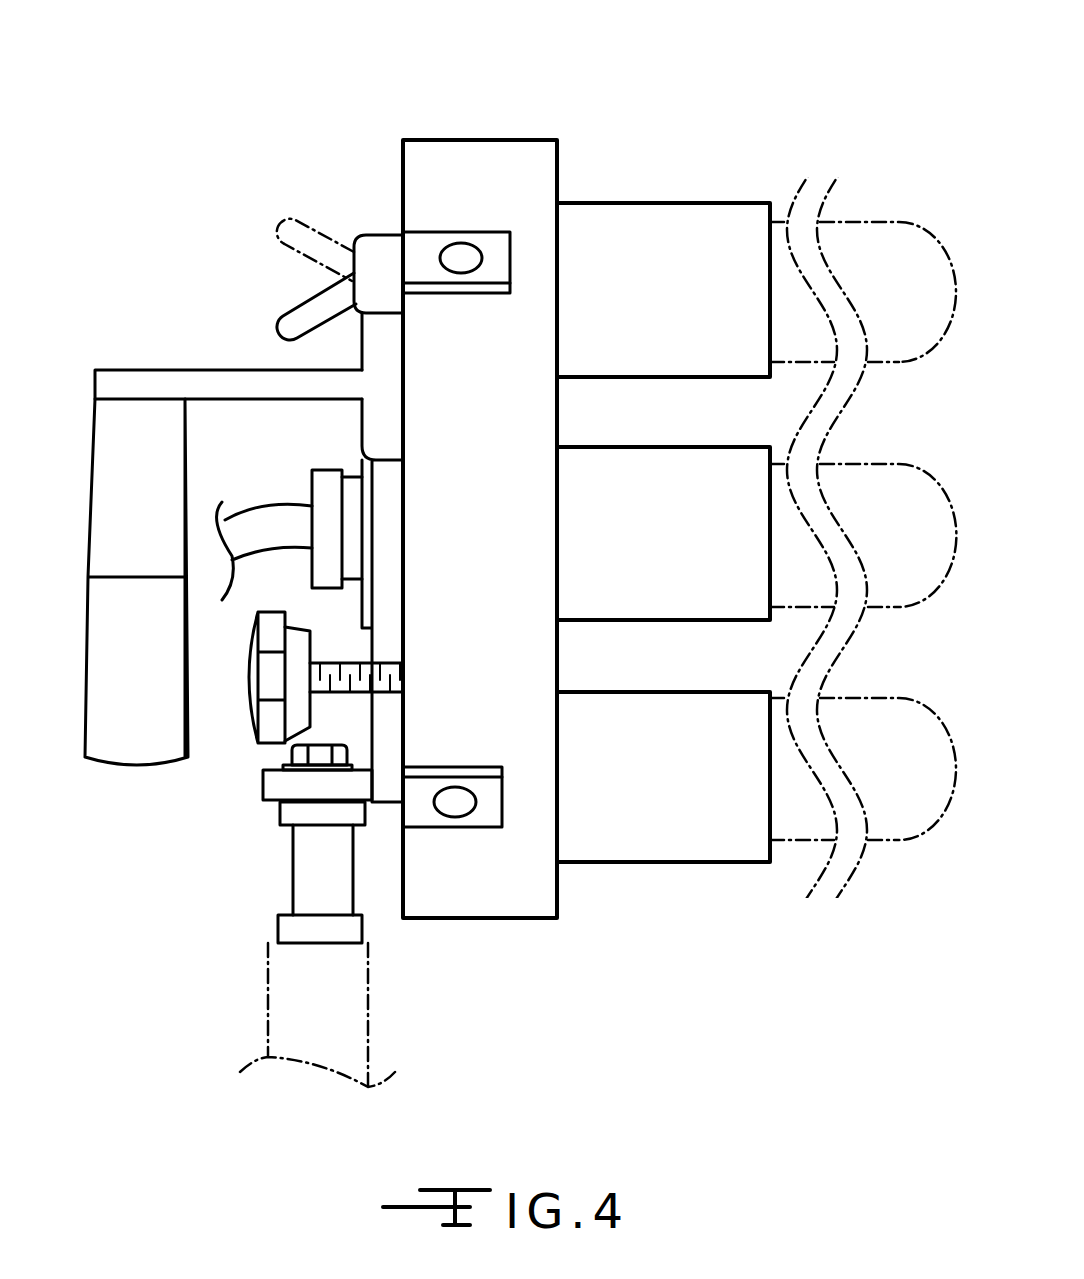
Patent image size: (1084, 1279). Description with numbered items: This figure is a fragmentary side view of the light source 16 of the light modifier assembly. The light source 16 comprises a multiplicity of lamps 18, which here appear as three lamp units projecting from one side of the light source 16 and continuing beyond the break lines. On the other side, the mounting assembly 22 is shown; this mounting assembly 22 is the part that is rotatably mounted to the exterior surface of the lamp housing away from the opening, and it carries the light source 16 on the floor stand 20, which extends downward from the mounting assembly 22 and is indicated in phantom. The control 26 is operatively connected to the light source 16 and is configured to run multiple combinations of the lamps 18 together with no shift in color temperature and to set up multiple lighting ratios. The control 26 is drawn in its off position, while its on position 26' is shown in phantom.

The light source 16 is at (477, 140).
The lamps 18 is at (694, 308).
The floor stand 20 is at (372, 1003).
The mounting assembly 22 is at (372, 716).
The control 26 is at (285, 302).
The control (on position) 26' is at (288, 206).